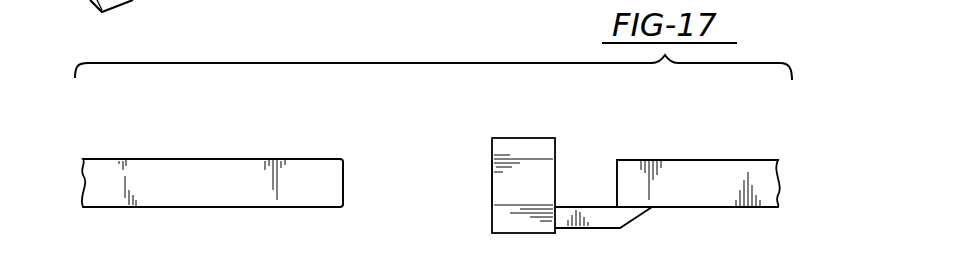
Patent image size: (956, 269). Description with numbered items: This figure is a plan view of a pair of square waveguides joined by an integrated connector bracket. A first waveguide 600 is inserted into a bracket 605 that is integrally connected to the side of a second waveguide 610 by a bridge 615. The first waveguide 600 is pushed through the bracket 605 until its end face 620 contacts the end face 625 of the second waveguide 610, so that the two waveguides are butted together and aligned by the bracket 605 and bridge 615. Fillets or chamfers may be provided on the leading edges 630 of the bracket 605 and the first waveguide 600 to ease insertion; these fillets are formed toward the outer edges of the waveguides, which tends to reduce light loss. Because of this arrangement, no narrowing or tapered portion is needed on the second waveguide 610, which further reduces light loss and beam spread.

The first waveguide 600 is at (157, 158).
The bracket 605 is at (505, 138).
The second waveguide 610 is at (677, 160).
The bridge 615 is at (593, 225).
The end face 620 is at (345, 177).
The end face 625 is at (617, 176).
The leading edges 630 is at (343, 160).